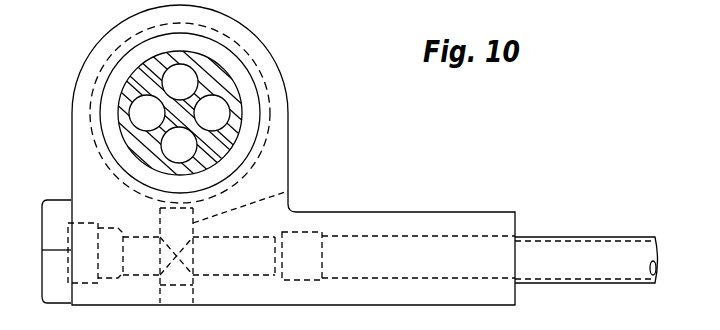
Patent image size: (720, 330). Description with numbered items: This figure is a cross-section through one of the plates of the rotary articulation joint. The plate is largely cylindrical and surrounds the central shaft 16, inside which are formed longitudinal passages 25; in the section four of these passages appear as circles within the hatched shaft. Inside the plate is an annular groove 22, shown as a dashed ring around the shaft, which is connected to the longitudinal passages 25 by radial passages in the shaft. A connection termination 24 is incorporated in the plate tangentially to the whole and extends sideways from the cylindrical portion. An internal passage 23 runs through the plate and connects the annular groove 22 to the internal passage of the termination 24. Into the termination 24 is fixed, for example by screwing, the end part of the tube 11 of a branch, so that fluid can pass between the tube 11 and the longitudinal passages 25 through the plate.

The tube 11 is at (582, 235).
The central shaft 16 is at (133, 140).
The annular groove 22 is at (266, 82).
The internal passage 23 is at (290, 186).
The connection termination 24 is at (427, 220).
The longitudinal passage 25 is at (168, 80).